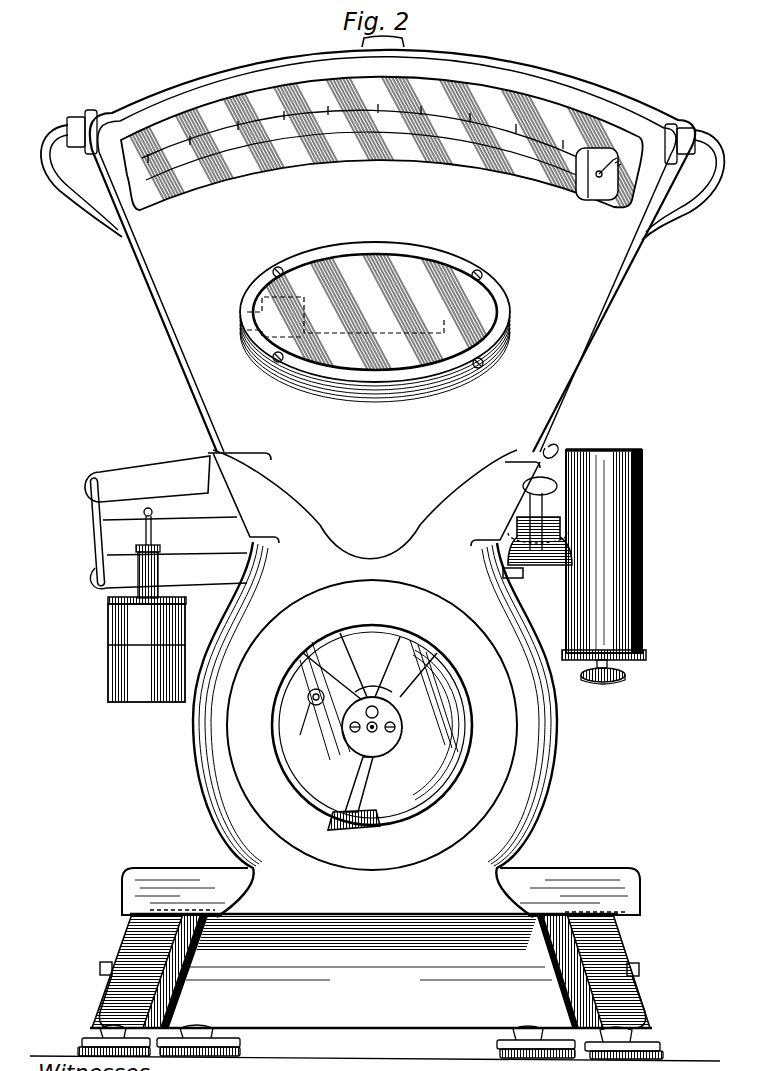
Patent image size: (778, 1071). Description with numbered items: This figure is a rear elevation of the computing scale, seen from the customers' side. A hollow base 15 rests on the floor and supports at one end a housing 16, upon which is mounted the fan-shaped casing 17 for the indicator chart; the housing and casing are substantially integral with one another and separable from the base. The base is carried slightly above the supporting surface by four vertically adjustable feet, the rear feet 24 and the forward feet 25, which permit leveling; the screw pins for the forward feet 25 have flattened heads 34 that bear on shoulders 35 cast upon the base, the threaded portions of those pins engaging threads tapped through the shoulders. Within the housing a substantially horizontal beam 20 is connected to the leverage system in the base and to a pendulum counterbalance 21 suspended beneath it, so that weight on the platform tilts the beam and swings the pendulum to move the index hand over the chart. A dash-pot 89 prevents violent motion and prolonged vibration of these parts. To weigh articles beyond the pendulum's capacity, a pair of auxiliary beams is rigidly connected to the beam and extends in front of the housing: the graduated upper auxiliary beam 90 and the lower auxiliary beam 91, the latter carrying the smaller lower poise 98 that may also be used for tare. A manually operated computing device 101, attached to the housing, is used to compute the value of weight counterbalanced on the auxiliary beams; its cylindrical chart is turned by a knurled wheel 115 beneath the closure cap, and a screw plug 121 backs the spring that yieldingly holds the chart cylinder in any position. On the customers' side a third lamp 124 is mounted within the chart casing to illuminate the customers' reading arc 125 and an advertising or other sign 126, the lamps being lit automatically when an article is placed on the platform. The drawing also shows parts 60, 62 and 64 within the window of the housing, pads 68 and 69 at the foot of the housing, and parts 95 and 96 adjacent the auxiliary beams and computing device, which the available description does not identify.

The hollow base 15 is at (371, 971).
The housing 16 is at (382, 476).
The fan-shaped casing 17 is at (598, 324).
The beam 20 is at (170, 510).
The pendulum counterbalance 21 is at (375, 826).
The feet 24 is at (242, 1048).
The feet 25 is at (88, 1038).
The flattened heads 34 is at (105, 962).
The shoulders 35 is at (96, 978).
The pulley 60 is at (318, 706).
The pointer arm 62 is at (372, 690).
The pointer arm 64 is at (322, 690).
The base pad 68 is at (540, 915).
The base pad 69 is at (194, 868).
The dash-pot 89 is at (108, 630).
The upper auxiliary beam 90 is at (142, 470).
The lower auxiliary beam 91 is at (198, 560).
The rod 95 is at (94, 547).
The link 96 is at (552, 452).
The lower poise 98 is at (517, 578).
The computing device 101 is at (644, 548).
The knurled wheel 115 is at (608, 684).
The screw plug 121 is at (636, 450).
The third lamp 124 is at (437, 330).
The customers' reading arc 125 is at (507, 123).
The advertising sign 126 is at (455, 378).